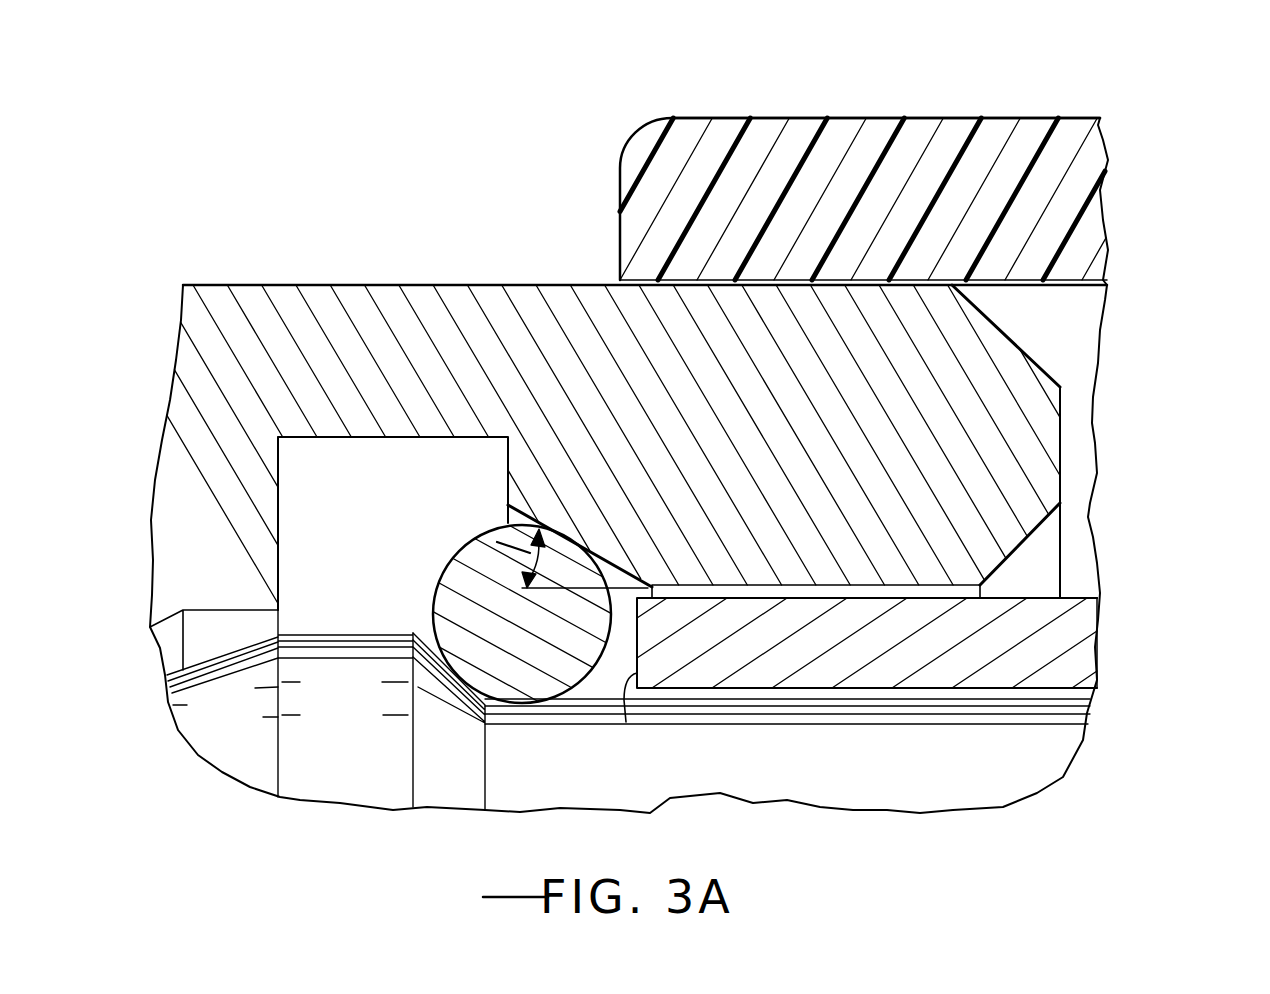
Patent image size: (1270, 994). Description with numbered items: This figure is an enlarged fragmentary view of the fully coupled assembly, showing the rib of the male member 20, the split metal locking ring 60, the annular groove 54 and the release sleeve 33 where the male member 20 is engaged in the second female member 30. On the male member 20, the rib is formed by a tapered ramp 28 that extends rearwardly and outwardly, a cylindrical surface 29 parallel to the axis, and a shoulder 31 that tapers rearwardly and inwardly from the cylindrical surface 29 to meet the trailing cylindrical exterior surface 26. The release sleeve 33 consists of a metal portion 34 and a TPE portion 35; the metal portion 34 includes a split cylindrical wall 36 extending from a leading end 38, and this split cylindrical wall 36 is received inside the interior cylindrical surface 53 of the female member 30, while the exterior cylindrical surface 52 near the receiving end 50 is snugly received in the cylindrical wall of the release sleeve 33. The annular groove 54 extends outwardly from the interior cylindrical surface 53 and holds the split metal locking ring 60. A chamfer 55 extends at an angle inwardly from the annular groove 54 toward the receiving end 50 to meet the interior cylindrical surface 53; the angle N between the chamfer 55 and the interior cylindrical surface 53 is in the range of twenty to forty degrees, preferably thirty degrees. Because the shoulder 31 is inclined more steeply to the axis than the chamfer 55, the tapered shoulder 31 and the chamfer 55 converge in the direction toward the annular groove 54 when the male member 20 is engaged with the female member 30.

The male member 20 is at (300, 806).
The trailing cylindrical exterior surface 26 is at (998, 773).
The tapered ramp 28 is at (252, 722).
The cylindrical surface 29 is at (370, 722).
The second female member 30 is at (413, 284).
The shoulder 31 is at (463, 758).
The release sleeve 33 is at (911, 114).
The metal portion 34 is at (1100, 645).
The TPE portion 35 is at (760, 137).
The split cylindrical wall 36 is at (787, 657).
The leading end 38 is at (626, 722).
The receiving end 50 is at (1063, 437).
The exterior cylindrical surface 52 is at (493, 284).
The interior cylindrical surface 53 is at (930, 583).
The annular groove 54 is at (337, 467).
The chamfer 55 is at (530, 510).
The split metal locking ring 60 is at (527, 690).
The angle N is at (535, 530).